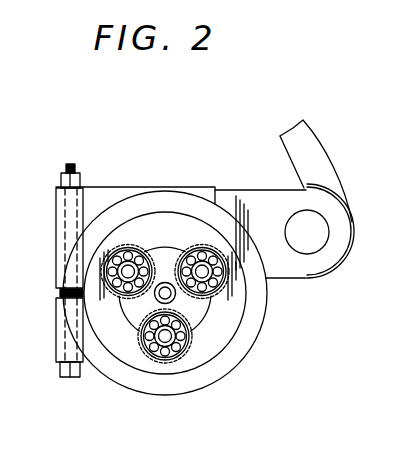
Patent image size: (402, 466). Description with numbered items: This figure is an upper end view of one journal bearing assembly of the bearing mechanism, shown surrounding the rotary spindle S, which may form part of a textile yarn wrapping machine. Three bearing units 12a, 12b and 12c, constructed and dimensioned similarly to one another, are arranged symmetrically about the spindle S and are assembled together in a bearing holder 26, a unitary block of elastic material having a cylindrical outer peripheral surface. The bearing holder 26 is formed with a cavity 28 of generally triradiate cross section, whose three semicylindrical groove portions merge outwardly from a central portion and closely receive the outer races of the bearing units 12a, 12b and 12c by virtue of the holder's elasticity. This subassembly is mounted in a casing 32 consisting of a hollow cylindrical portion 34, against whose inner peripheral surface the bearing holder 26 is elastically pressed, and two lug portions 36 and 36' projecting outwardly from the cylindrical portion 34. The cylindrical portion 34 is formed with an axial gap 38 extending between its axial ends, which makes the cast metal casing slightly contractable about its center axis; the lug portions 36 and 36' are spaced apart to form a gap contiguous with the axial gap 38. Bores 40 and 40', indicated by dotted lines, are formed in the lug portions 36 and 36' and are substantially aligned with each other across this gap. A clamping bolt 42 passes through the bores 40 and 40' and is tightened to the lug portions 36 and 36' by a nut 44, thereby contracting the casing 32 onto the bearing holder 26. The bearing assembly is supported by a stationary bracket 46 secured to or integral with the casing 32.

The bearing unit 12a is at (150, 240).
The bearing unit 12b is at (175, 364).
The bearing unit 12c is at (213, 251).
The bearing holder 26 is at (232, 343).
The cavity 28 is at (200, 320).
The casing 32 is at (201, 193).
The cylindrical portion 34 is at (130, 395).
The lug portion 36 is at (46, 220).
The lug portion 36' is at (47, 330).
The axial gap 38 is at (60, 291).
The bore 40 is at (45, 238).
The bore 40' is at (44, 331).
The clamping bolt 42 is at (68, 378).
The nut 44 is at (80, 181).
The stationary bracket 46 is at (277, 279).
The rotary spindle S is at (135, 327).